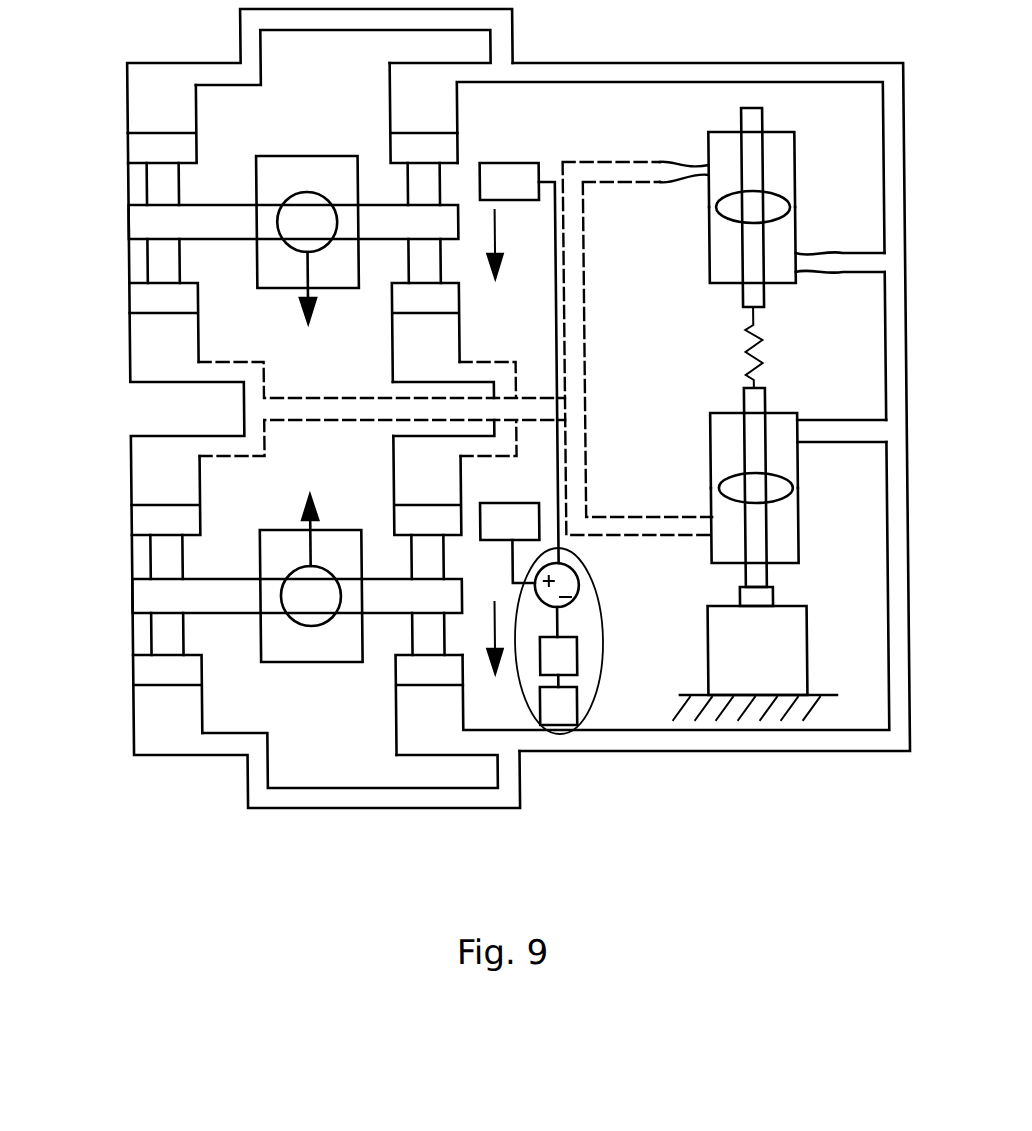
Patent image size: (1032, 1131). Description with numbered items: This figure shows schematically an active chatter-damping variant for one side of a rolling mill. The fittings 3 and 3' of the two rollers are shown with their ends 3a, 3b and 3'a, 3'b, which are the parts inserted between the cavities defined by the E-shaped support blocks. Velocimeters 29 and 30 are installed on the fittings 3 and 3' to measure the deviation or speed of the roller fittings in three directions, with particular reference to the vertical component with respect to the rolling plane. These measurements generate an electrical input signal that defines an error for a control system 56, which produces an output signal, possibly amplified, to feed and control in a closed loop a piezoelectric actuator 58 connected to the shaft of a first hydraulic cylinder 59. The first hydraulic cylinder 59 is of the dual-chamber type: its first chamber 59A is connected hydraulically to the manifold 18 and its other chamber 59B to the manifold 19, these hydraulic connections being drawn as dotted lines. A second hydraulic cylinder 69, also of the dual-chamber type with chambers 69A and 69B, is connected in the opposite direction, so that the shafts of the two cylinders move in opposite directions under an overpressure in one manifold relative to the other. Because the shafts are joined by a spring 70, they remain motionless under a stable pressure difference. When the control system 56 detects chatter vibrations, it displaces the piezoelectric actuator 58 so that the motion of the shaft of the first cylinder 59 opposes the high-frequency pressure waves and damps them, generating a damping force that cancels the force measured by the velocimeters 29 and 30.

The fitting 3 is at (293, 254).
The end of fitting 3a is at (396, 216).
The end of fitting 3b is at (162, 223).
The fitting 3' is at (297, 625).
The end of fitting 3'a is at (374, 595).
The end of fitting 3'b is at (113, 594).
The manifold 18 is at (504, 407).
The manifold 19 is at (880, 422).
The velocimeter 29 is at (519, 362).
The velocimeter 30 is at (510, 587).
The control system 56 is at (586, 712).
The piezoelectric actuator 58 is at (760, 633).
The first hydraulic cylinder 59 is at (740, 497).
The first chamber 59A is at (793, 522).
The other chamber 59B is at (726, 433).
The second hydraulic cylinder 69 is at (727, 190).
The chamber of second hydraulic cylinder 69A is at (720, 230).
The chamber of second hydraulic cylinder 69B is at (718, 144).
The spring 70 is at (762, 342).